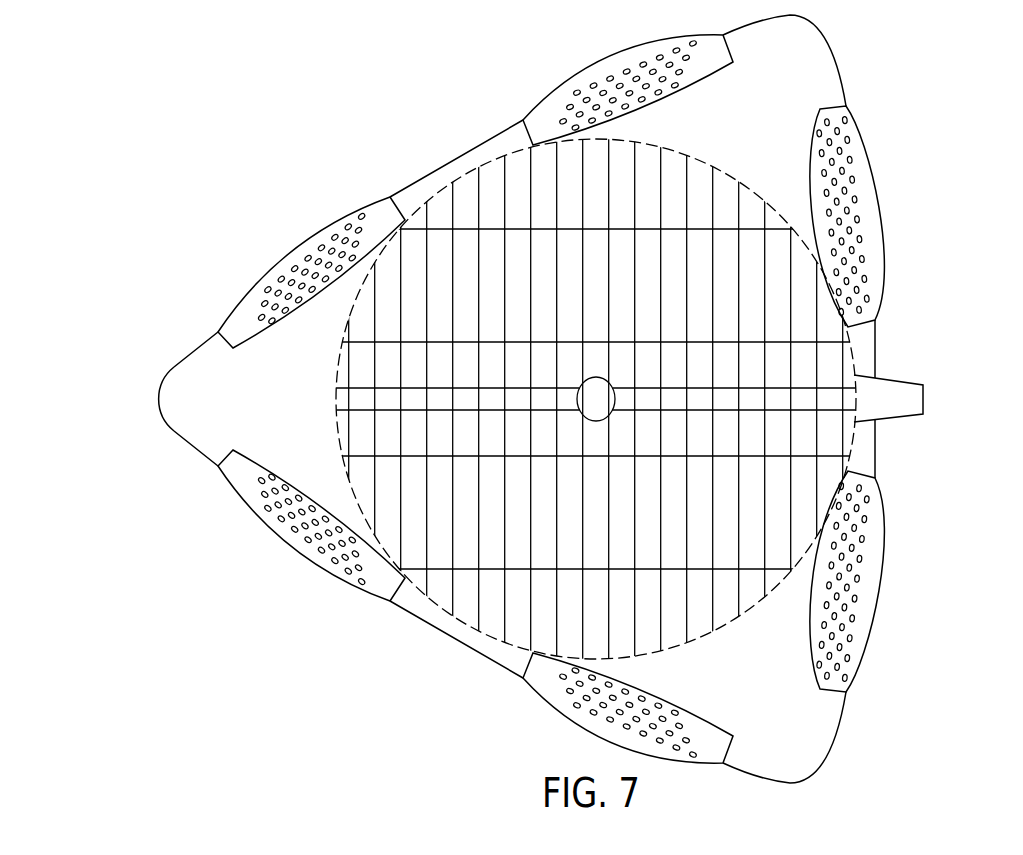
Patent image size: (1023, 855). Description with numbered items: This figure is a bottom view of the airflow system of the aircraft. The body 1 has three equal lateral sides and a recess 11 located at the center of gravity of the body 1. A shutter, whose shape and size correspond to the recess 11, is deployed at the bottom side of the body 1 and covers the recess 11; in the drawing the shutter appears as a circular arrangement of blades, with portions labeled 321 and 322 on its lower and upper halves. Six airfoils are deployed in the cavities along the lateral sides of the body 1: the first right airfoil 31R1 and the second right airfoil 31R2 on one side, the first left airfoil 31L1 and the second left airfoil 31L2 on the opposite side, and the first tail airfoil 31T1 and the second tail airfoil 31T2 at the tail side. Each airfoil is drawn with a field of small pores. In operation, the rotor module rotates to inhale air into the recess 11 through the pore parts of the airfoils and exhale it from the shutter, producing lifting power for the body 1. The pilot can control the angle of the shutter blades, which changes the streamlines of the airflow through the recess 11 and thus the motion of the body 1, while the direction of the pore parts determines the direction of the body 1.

The body 1 is at (138, 499).
The recess 11 is at (383, 365).
The first right airfoil 31R1 is at (332, 243).
The second right airfoil 31R2 is at (578, 100).
The first tail airfoil 31T1 is at (850, 168).
The second tail airfoil 31T2 is at (862, 572).
The first left airfoil 31L1 is at (278, 515).
The second left airfoil 31L2 is at (533, 668).
The first grille portion 321 is at (528, 587).
The second grille portion 322 is at (525, 207).